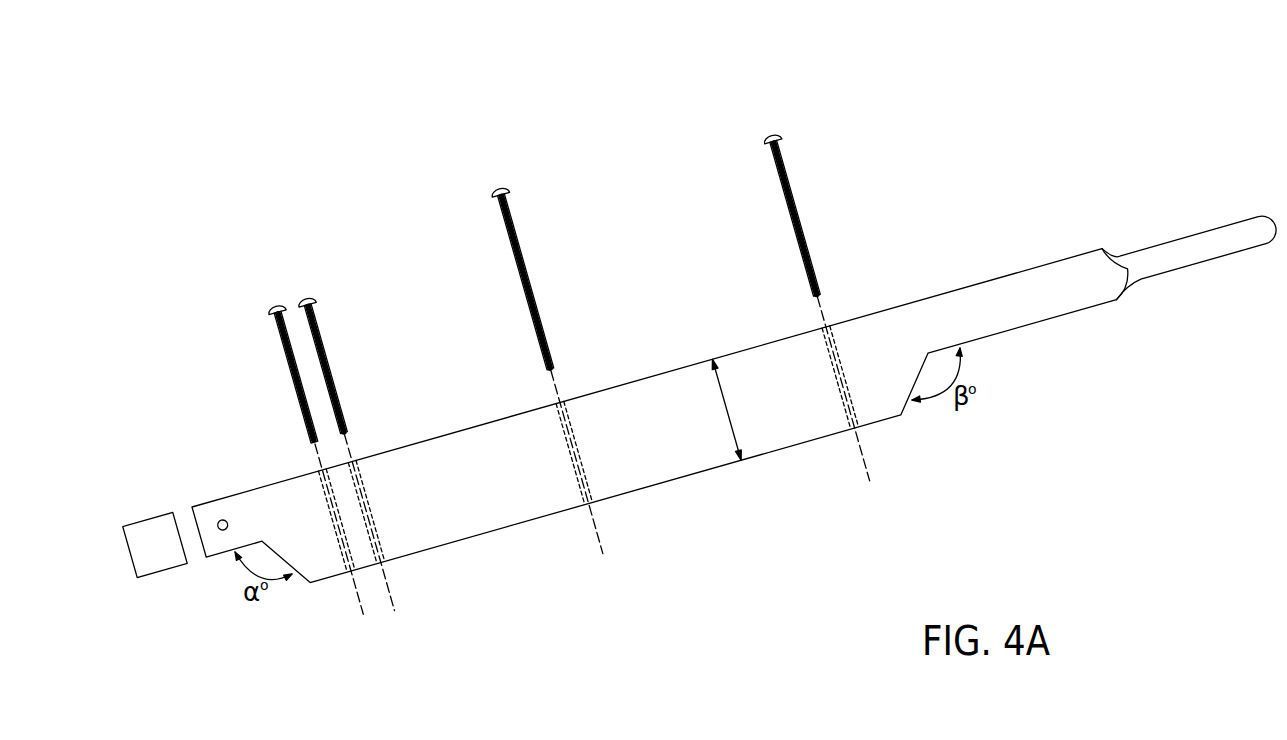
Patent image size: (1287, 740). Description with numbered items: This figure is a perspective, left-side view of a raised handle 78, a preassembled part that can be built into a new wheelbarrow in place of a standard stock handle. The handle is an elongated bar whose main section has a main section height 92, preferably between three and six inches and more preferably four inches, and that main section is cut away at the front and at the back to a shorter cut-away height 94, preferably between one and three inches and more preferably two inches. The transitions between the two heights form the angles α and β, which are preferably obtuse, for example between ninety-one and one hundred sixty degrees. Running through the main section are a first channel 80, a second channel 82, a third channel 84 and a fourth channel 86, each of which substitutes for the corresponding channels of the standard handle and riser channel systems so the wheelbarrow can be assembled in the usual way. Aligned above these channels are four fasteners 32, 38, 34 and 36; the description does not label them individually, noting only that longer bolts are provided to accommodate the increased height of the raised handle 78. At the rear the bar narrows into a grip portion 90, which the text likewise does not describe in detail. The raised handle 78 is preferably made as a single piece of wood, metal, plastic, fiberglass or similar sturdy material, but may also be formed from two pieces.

The raised handle 78 is at (1015, 143).
The screw 32 is at (292, 380).
The screw 38 is at (335, 370).
The screw 34 is at (530, 278).
The screw 36 is at (797, 210).
The first channel 80 is at (338, 537).
The second channel 82 is at (375, 510).
The third channel 84 is at (582, 453).
The fourth channel 86 is at (843, 367).
The handle 90 is at (1190, 257).
The main section height 92 is at (727, 413).
The cut-away height 94 is at (125, 553).